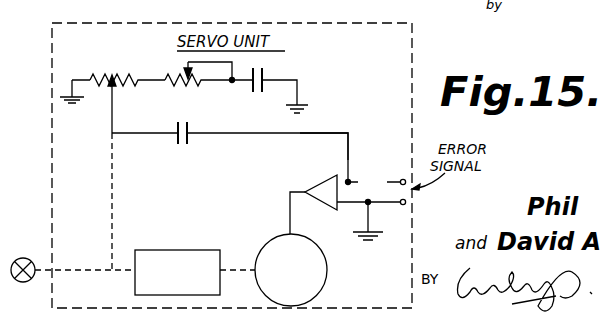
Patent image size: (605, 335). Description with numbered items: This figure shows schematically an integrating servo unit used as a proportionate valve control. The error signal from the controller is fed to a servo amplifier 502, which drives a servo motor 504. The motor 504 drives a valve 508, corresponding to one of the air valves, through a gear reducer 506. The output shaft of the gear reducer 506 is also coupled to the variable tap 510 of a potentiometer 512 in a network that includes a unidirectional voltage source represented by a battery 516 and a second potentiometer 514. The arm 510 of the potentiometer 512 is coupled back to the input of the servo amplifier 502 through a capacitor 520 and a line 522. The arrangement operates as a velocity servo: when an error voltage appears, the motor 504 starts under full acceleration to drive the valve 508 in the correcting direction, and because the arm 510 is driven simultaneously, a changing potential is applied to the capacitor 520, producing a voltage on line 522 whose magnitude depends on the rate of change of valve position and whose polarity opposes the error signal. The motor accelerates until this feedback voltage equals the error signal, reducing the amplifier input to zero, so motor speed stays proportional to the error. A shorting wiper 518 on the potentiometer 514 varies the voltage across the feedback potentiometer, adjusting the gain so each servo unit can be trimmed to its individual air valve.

The servo amplifier 502 is at (328, 178).
The servo motor 504 is at (282, 243).
The gear reducer 506 is at (192, 250).
The valve 508 is at (25, 258).
The variable tap 510 is at (114, 95).
The potentiometer 512 is at (112, 73).
The potentiometer 514 is at (195, 86).
The battery 516 is at (270, 80).
The shorting wiper 518 is at (185, 63).
The capacitor 520 is at (188, 137).
The line 522 is at (328, 133).